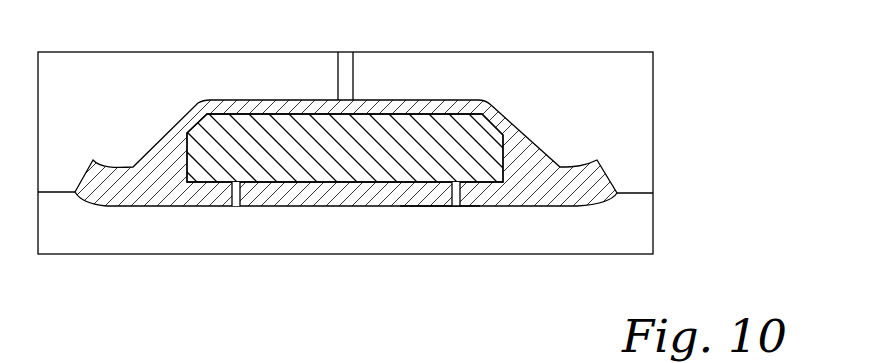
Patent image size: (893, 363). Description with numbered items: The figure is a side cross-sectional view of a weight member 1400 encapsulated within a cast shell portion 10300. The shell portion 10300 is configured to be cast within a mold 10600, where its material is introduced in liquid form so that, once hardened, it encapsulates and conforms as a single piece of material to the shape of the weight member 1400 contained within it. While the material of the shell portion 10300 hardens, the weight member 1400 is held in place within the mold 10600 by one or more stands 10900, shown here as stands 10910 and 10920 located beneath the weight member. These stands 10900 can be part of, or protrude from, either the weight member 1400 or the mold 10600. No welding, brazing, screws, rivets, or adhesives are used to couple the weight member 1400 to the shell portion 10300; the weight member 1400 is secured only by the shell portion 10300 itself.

The weight member 1400 is at (270, 132).
The shell portion 10300 is at (173, 193).
The stand 10910 is at (235, 207).
The stand 10920 is at (457, 207).
The stands 10900 is at (440, 221).
The mold 10600 is at (550, 240).